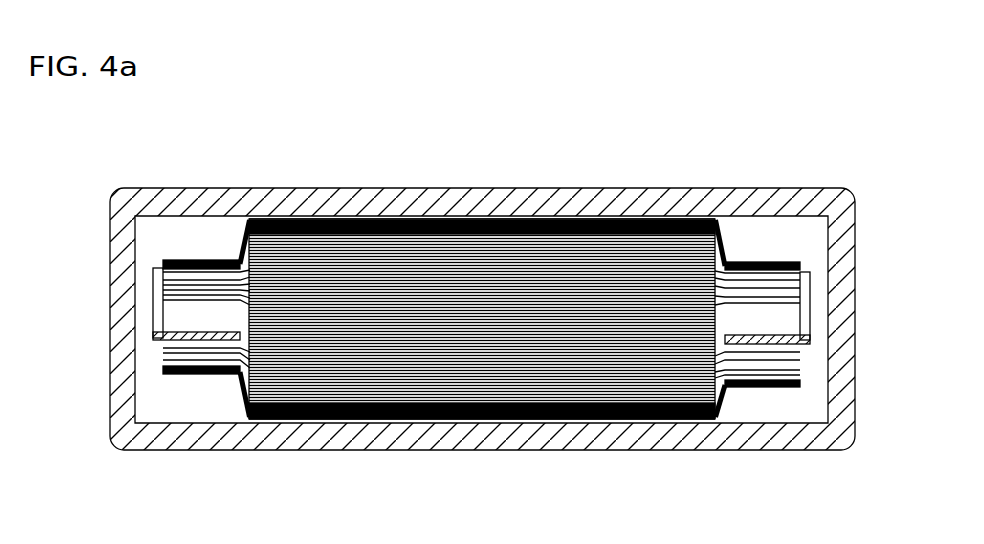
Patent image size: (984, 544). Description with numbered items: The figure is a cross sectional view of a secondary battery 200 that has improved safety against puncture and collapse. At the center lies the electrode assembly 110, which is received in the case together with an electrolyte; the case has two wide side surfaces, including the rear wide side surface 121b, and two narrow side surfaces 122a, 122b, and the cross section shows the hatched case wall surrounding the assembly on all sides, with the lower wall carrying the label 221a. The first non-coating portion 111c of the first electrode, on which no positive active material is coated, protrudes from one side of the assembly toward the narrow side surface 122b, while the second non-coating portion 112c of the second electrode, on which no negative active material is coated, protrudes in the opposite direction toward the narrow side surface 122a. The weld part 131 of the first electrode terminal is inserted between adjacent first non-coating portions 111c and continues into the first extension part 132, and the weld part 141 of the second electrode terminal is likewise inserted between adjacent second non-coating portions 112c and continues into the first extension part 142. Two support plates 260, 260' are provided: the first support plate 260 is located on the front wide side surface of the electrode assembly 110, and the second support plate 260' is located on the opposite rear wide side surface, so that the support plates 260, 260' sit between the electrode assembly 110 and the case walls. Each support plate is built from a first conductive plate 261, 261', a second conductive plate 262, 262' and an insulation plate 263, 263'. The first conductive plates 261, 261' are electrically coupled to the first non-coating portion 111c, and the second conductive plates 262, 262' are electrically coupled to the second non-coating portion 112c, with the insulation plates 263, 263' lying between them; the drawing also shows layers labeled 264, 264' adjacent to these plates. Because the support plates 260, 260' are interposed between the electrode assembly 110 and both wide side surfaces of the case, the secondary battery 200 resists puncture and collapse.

The secondary battery 200 is at (828, 159).
The electrode assembly 110 is at (628, 250).
The first non-coating portion 111c is at (778, 270).
The second non-coating portion 112c is at (185, 268).
The wide side surface 121b is at (387, 200).
The lower case wall 221a is at (388, 436).
The narrow side surface 122a is at (120, 246).
The narrow side surface 122b is at (848, 252).
The weld part 131 is at (790, 335).
The first extension part 132 is at (812, 293).
The weld part 141 is at (182, 331).
The first extension part 142 is at (152, 288).
The first support plate 260 is at (482, 467).
The second support plate 260' is at (482, 172).
The first conductive plate 261 is at (758, 448).
The first conductive plate 261' is at (758, 198).
The second conductive plate 262 is at (206, 440).
The second conductive plate 262' is at (206, 197).
The insulation plate 263 is at (482, 459).
The insulation plate 263' is at (482, 179).
The lower insulating layer 264 is at (482, 467).
The upper insulating layer 264' is at (482, 173).